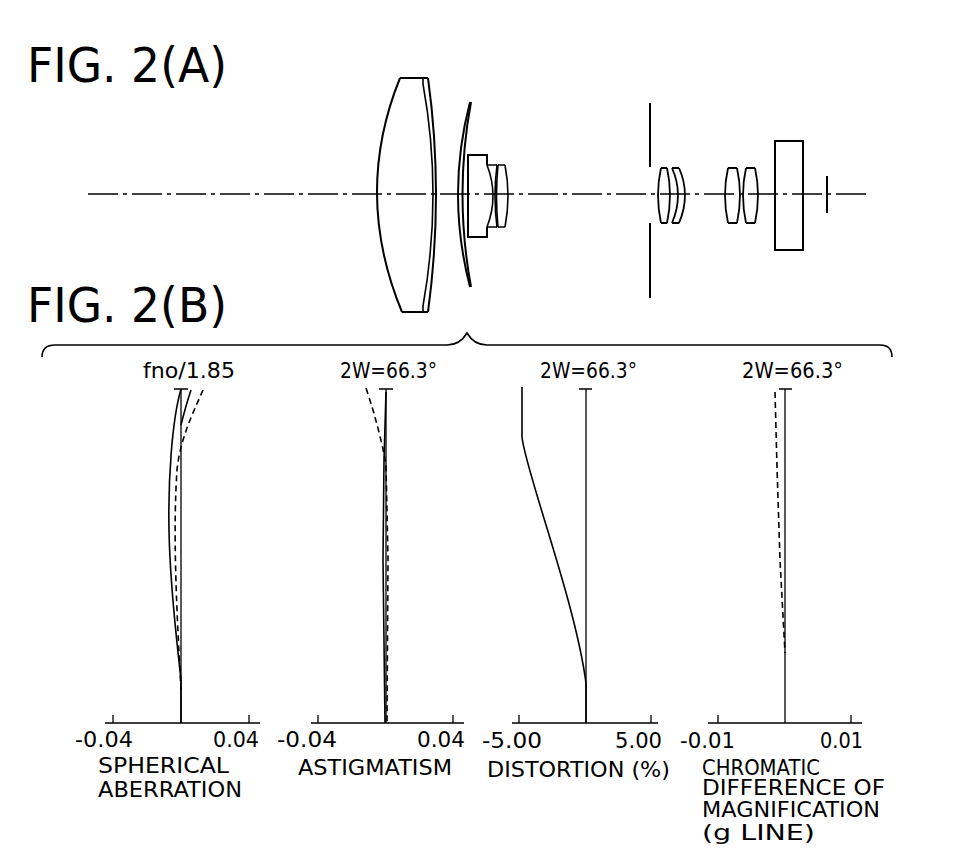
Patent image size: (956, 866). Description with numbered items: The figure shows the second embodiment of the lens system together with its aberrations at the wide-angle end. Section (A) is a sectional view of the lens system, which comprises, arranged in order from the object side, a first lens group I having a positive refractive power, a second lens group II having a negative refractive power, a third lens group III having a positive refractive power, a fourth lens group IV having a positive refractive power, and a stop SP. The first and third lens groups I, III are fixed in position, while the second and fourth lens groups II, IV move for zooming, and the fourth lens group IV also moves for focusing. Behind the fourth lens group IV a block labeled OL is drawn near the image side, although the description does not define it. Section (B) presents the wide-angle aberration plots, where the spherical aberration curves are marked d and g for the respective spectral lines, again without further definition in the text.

In FIG. 2A, the first lens group I is at (467, 48).
In FIG. 2A, the second lens group II is at (510, 48).
In FIG. 2A, the third lens group III is at (687, 48).
In FIG. 2A, the fourth lens group IV is at (758, 48).
In FIG. 2A, the stop SP is at (648, 262).
In FIG. 2A, the optical low-pass filter / glass block OL is at (803, 142).
In FIG. 2B, the d-line spherical aberration curve d is at (168, 457).
In FIG. 2B, the g-line spherical aberration curve g is at (187, 418).